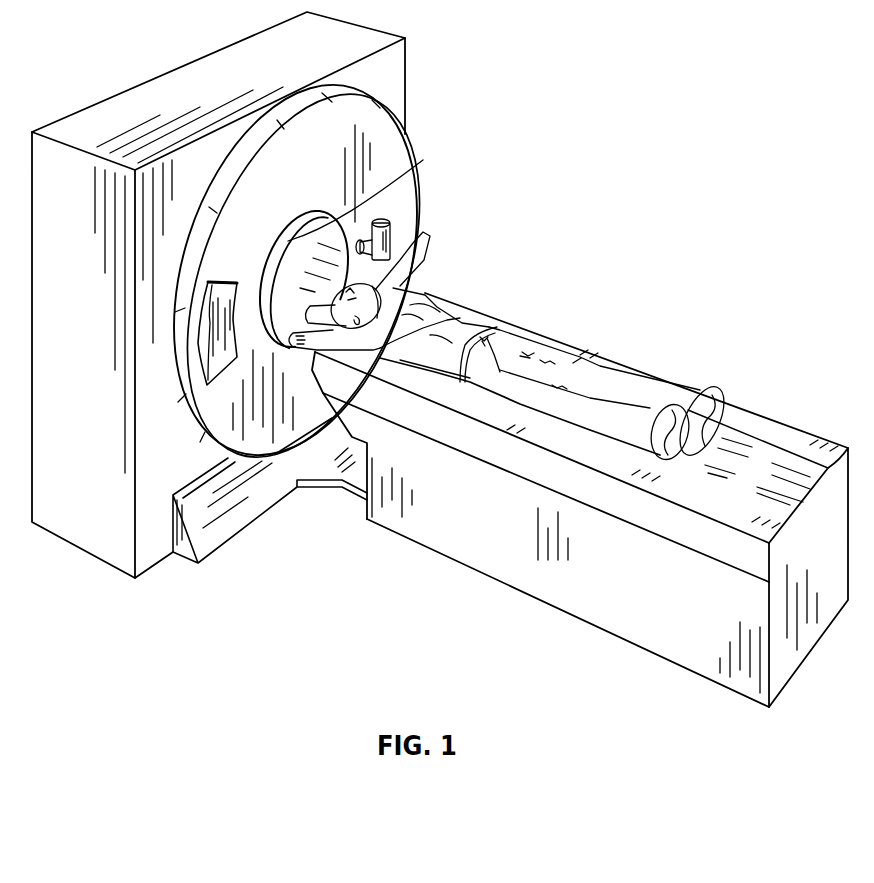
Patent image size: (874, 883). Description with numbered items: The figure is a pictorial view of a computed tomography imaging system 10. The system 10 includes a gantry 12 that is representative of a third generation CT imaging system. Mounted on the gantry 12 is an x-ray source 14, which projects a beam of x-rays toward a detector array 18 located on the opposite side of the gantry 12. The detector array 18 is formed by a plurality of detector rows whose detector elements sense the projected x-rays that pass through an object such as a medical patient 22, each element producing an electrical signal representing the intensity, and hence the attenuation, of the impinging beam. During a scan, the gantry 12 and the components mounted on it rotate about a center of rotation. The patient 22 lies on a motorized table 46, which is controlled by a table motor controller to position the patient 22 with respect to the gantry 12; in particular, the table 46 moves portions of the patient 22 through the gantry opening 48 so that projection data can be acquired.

The computed tomography (CT) imaging system 10 is at (584, 139).
The gantry 12 is at (393, 113).
The x-ray source 14 is at (383, 245).
The detector array 18 is at (220, 368).
The medical patient 22 is at (460, 320).
The motorized table 46 is at (465, 530).
The gantry opening 48 is at (423, 160).